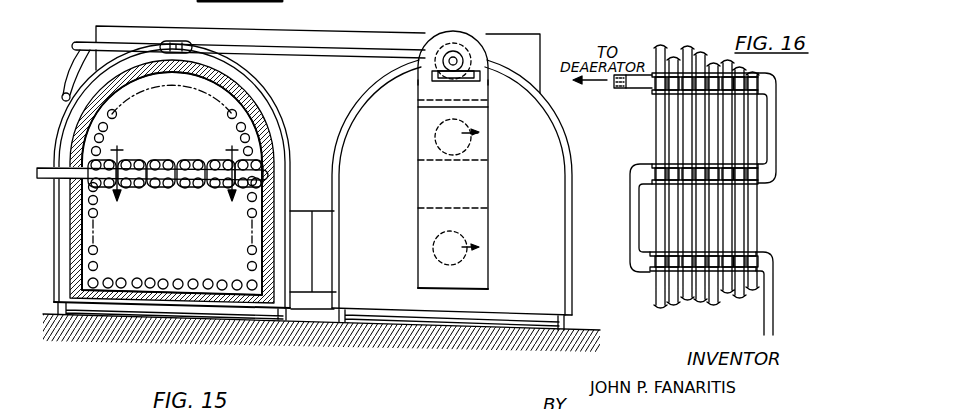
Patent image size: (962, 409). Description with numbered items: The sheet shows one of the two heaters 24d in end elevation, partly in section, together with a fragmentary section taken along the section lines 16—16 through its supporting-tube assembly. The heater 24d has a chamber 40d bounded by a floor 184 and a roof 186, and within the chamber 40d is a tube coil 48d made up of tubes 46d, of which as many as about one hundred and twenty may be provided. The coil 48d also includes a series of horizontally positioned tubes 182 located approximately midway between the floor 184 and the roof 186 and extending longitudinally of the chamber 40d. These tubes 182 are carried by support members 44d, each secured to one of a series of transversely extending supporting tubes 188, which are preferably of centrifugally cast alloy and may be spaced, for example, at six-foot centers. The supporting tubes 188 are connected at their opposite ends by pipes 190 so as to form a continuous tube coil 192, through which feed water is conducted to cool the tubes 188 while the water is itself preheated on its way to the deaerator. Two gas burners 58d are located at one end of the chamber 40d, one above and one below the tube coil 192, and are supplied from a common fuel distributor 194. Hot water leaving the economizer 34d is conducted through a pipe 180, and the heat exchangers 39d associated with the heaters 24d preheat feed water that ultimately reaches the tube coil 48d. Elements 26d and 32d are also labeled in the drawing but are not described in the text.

In FIG. 15, the pipe 180 is at (72, 47).
In FIG. 15, the heat exchanger 39d is at (181, 13).
In FIG. 15, the chamber 40d is at (205, 122).
In FIG. 15, the roof 186 is at (194, 90).
In FIG. 15, the section lines 16 is at (137, 142).
In FIG. 15, the supporting tube 188 is at (44, 166).
In FIG. 16, the supporting tube 188 is at (723, 170).
In FIG. 15, the horizontally positioned tubes 182 is at (190, 188).
In FIG. 16, the horizontally positioned tubes 182 is at (710, 241).
In FIG. 15, the support member 44d is at (219, 190).
In FIG. 16, the support member 44d is at (655, 93).
In FIG. 15, the tube coil 48d is at (78, 258).
In FIG. 15, the base 26d is at (56, 308).
In FIG. 15, the tubes 46d is at (164, 278).
In FIG. 15, the floor 184 is at (213, 287).
In FIG. 15, the drum 32d is at (452, 195).
In FIG. 15, the economizer 34d is at (505, 30).
In FIG. 15, the heater 24d is at (410, 23).
In FIG. 15, the burner 58d is at (482, 132).
In FIG. 15, the common fuel distributor 194 is at (470, 192).
In FIG. 16, the pipes 190 is at (773, 134).
In FIG. 16, the continuous tube coil 192 is at (788, 110).